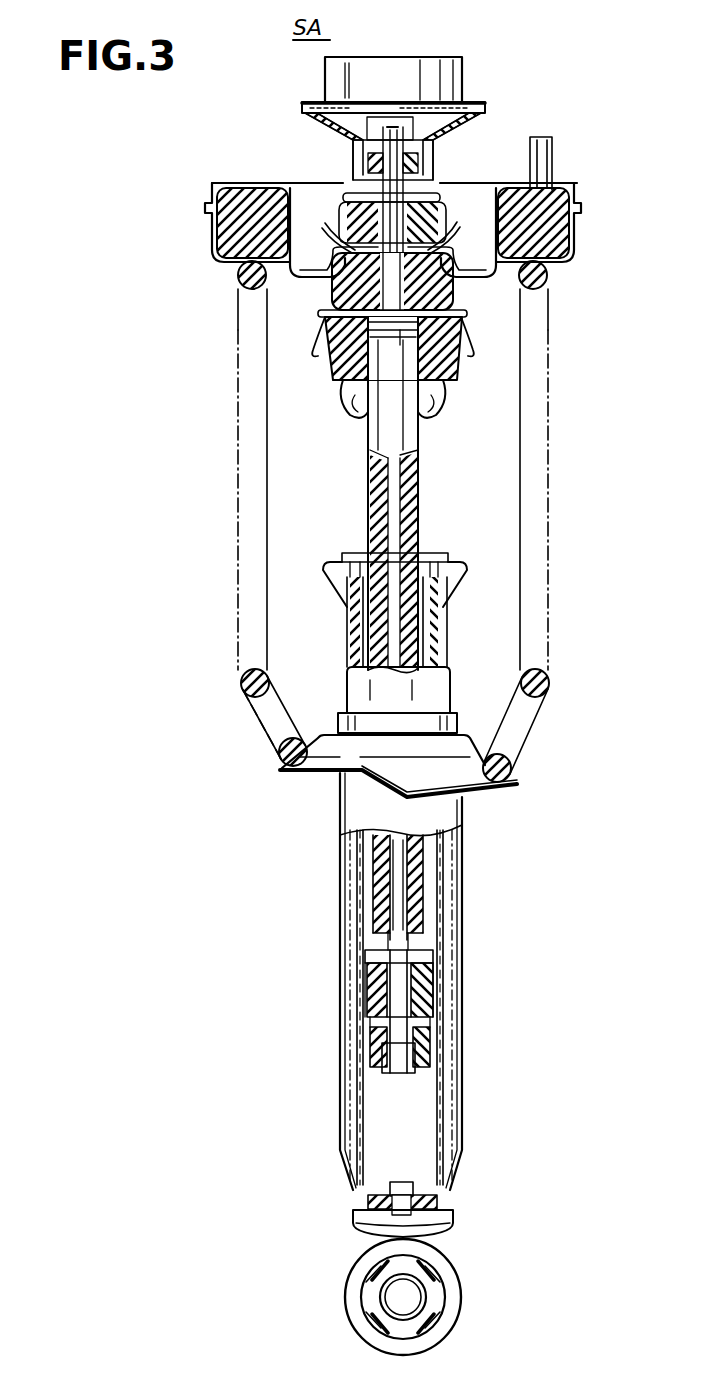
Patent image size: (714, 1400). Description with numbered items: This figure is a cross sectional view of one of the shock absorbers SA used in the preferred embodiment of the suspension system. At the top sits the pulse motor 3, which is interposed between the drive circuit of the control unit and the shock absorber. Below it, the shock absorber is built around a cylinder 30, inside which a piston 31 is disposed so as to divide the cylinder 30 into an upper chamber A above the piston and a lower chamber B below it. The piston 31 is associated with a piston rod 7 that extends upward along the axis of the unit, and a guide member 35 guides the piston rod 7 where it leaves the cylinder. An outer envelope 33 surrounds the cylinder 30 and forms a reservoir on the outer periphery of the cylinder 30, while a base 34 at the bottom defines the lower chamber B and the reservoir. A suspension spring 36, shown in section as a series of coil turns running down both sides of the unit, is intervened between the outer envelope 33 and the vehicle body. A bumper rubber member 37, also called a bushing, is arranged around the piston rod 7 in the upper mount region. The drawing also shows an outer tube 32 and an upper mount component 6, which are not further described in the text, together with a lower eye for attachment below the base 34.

The pulse motor 3 is at (462, 58).
The bearing / upper mount housing 6 is at (437, 182).
The piston rod 7 is at (358, 625).
The cylinder 30 is at (440, 1060).
The piston 31 is at (437, 993).
The outer tube 32 is at (350, 1102).
The outer envelope 33 is at (340, 978).
The base 34 is at (450, 1207).
The guide member 35 is at (443, 593).
The suspension spring 36 is at (549, 688).
The bumper rubber member 37 is at (462, 365).
The upper chamber A is at (430, 847).
The lower chamber B is at (422, 1148).